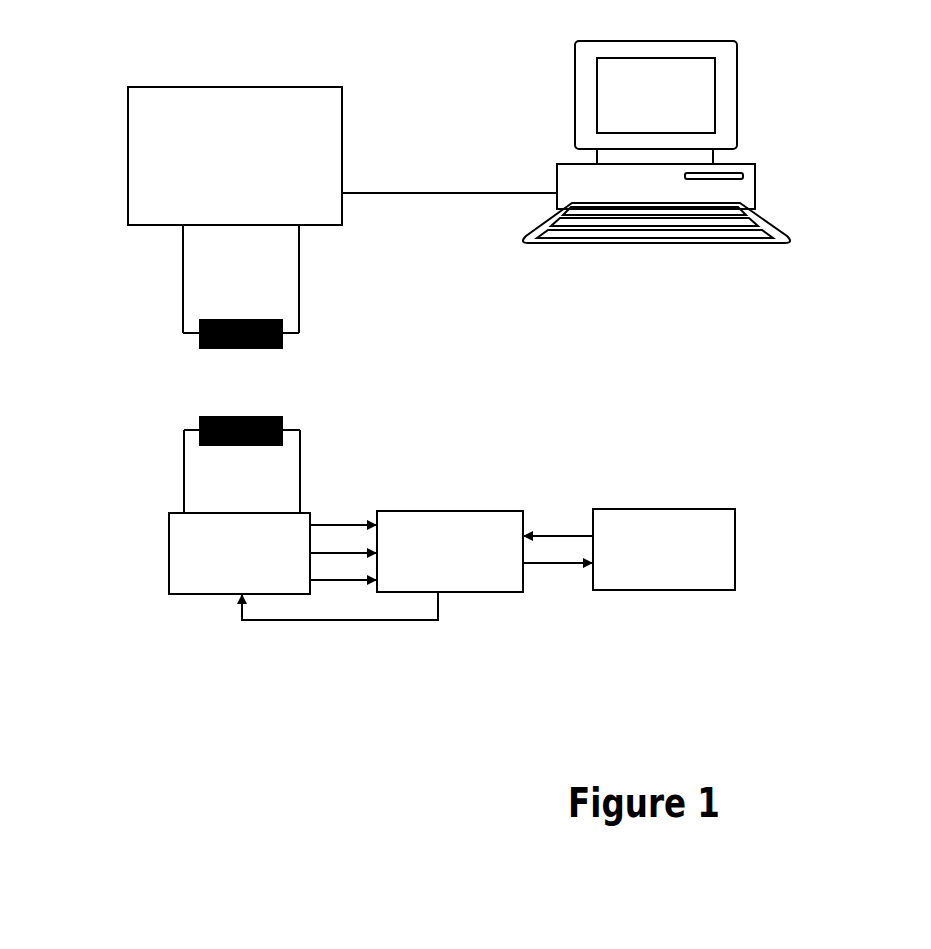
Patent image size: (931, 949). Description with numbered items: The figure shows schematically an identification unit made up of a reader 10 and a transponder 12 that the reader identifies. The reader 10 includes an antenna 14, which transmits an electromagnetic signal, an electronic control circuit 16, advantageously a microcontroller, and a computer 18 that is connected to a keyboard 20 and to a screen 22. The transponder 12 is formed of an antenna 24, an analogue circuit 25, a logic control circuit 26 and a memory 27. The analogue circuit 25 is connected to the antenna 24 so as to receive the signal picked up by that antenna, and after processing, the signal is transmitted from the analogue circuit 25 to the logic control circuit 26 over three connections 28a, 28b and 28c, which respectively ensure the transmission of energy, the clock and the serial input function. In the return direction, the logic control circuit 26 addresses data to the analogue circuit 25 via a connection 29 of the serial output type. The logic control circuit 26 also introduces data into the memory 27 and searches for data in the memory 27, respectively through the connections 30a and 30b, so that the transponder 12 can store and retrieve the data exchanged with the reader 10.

The reader 10 is at (163, 58).
The transponder 12 is at (184, 628).
The antenna 14 is at (200, 340).
The electronic control circuit 16 is at (298, 100).
The computer 18 is at (565, 178).
The keyboard 20 is at (750, 222).
The screen 22 is at (720, 93).
The antenna 24 is at (270, 418).
The analogue circuit 25 is at (285, 525).
The logic control circuit 26 is at (440, 523).
The memory 27 is at (636, 520).
The connection 28a is at (328, 522).
The connection 28b is at (328, 548).
The connection 28c is at (328, 575).
The connection 29 is at (370, 622).
The connection 30a is at (537, 565).
The connection 30b is at (552, 530).